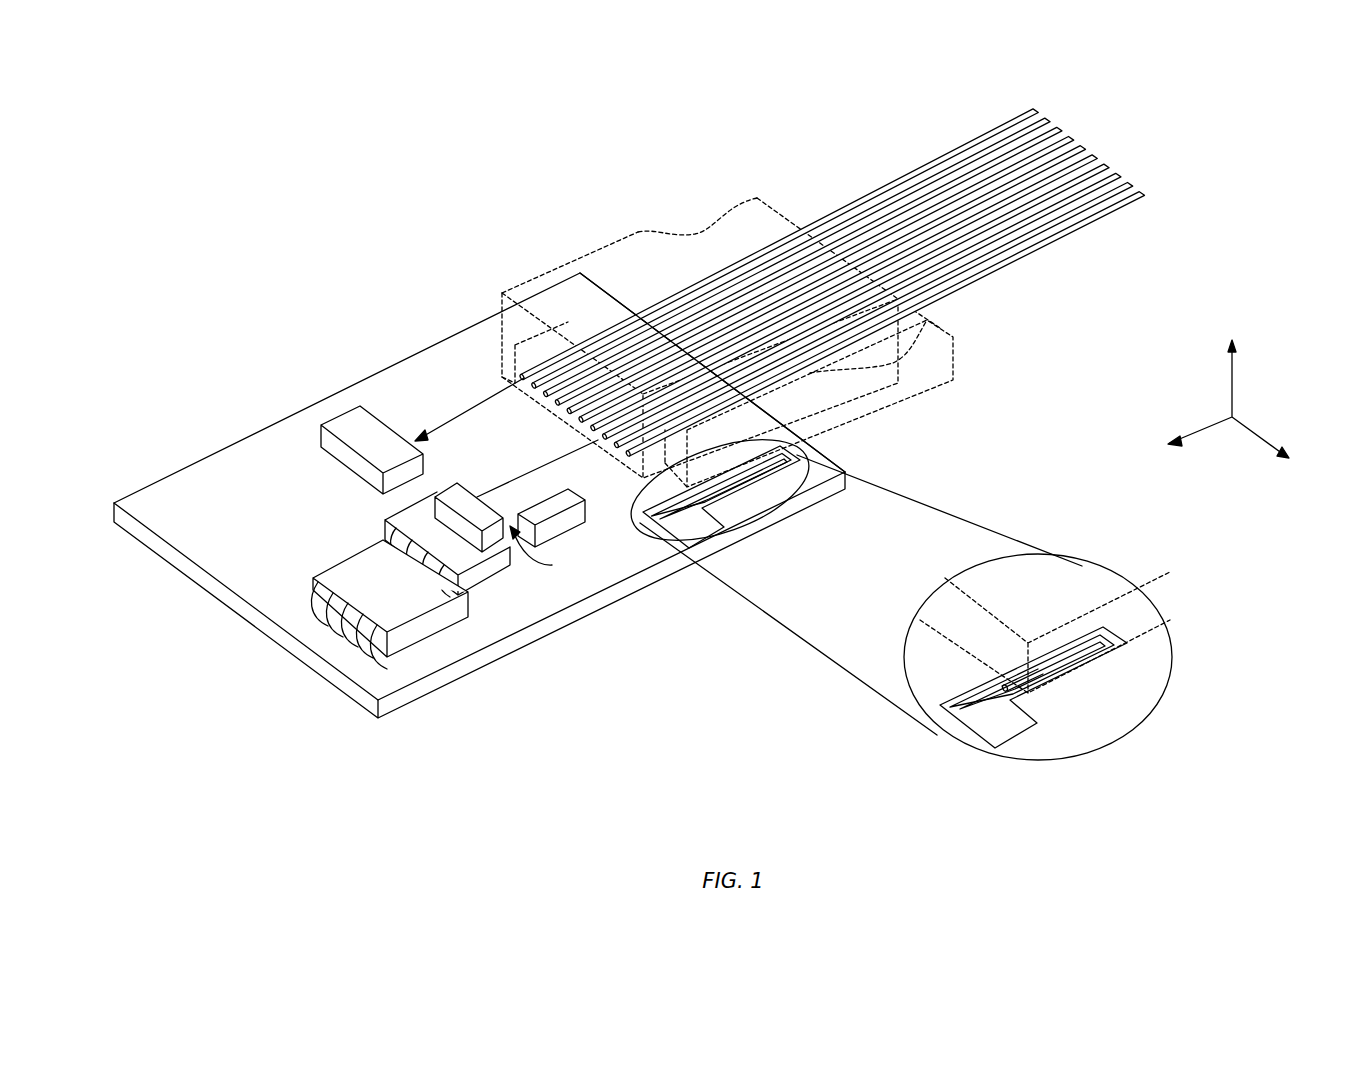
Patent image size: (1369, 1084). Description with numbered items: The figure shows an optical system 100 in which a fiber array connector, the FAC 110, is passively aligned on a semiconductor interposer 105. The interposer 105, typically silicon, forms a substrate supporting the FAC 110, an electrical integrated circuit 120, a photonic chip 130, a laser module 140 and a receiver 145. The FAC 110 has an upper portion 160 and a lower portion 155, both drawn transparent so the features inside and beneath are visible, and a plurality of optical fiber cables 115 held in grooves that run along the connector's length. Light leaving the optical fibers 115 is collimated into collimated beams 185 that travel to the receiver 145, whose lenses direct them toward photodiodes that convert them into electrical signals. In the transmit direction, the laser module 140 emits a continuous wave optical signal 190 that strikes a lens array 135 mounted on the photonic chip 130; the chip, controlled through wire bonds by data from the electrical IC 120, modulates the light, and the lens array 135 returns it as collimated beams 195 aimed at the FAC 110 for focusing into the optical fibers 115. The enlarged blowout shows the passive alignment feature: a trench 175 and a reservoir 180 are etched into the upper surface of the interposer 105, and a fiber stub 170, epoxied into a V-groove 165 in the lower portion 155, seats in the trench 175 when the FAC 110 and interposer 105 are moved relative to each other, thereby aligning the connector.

The optical system 100 is at (375, 142).
The semiconductor interposer 105 is at (200, 459).
The fiber array connector (FAC) 110 is at (617, 232).
The optical fiber cables 115 is at (860, 283).
The electrical integrated circuit (IC) 120 is at (348, 562).
The photonic chip 130 is at (410, 513).
The lens array 135 is at (450, 493).
The laser module 140 is at (543, 505).
The receiver 145 is at (333, 447).
The lower portion 155 is at (928, 393).
The upper portion 160 is at (928, 322).
The V-groove 165 is at (1003, 667).
The fiber stub 170 is at (850, 577).
The trench 175 is at (1109, 655).
The reservoir 180 is at (1013, 722).
The collimated beams 185 is at (480, 403).
The continuous wave (CW) optical signal 190 is at (554, 551).
The collimated beams 195 is at (575, 450).